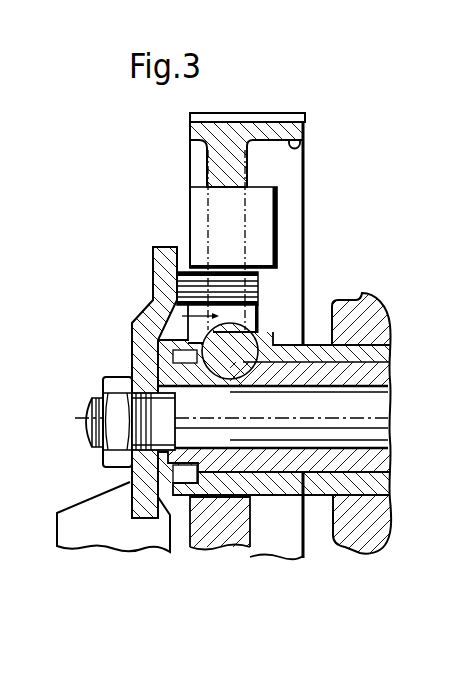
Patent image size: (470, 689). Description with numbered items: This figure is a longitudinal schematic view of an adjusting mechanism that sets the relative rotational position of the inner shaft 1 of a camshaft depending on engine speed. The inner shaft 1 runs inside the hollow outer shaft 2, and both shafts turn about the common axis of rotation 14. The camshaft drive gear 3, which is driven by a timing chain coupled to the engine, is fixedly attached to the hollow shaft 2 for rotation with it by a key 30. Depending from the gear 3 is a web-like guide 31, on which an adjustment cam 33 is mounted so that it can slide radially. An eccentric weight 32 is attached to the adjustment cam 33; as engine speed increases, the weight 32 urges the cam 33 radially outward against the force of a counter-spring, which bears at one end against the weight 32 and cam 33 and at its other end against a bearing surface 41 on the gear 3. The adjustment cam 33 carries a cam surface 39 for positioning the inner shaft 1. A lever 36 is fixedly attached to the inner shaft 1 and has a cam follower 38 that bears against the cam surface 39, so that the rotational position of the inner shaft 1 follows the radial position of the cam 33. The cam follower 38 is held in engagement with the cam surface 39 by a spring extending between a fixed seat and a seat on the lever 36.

The inner shaft 1 is at (376, 408).
The outer shaft 2 is at (362, 373).
The camshaft drive gear 3 is at (233, 106).
The axis of rotation 14 is at (362, 420).
The key 30 is at (257, 362).
The web-like guide 31 is at (236, 165).
The eccentric weight 32 is at (262, 198).
The adjustment cam 33 is at (150, 307).
The lever 36 is at (126, 351).
The cam follower 38 is at (187, 287).
The cam surface 39 is at (230, 325).
The bearing surface 41 is at (300, 144).